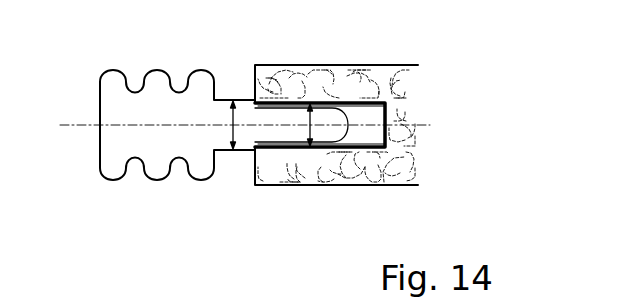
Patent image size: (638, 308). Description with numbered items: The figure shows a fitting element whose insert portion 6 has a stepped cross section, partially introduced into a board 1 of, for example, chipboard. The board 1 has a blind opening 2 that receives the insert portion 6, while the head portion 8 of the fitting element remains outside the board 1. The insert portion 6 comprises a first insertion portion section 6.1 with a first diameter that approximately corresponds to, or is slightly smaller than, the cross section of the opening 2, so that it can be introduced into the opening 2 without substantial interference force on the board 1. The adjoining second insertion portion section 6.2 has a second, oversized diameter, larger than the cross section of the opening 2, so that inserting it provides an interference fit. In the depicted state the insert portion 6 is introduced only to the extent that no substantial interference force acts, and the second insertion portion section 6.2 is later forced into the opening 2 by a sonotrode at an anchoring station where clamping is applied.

The board 1 is at (405, 108).
The blind opening 2 is at (316, 126).
The insert portion 6 is at (265, 103).
The first insertion portion section 6.1 is at (289, 146).
The second insertion portion section 6.2 is at (246, 150).
The head portion 8 is at (178, 108).